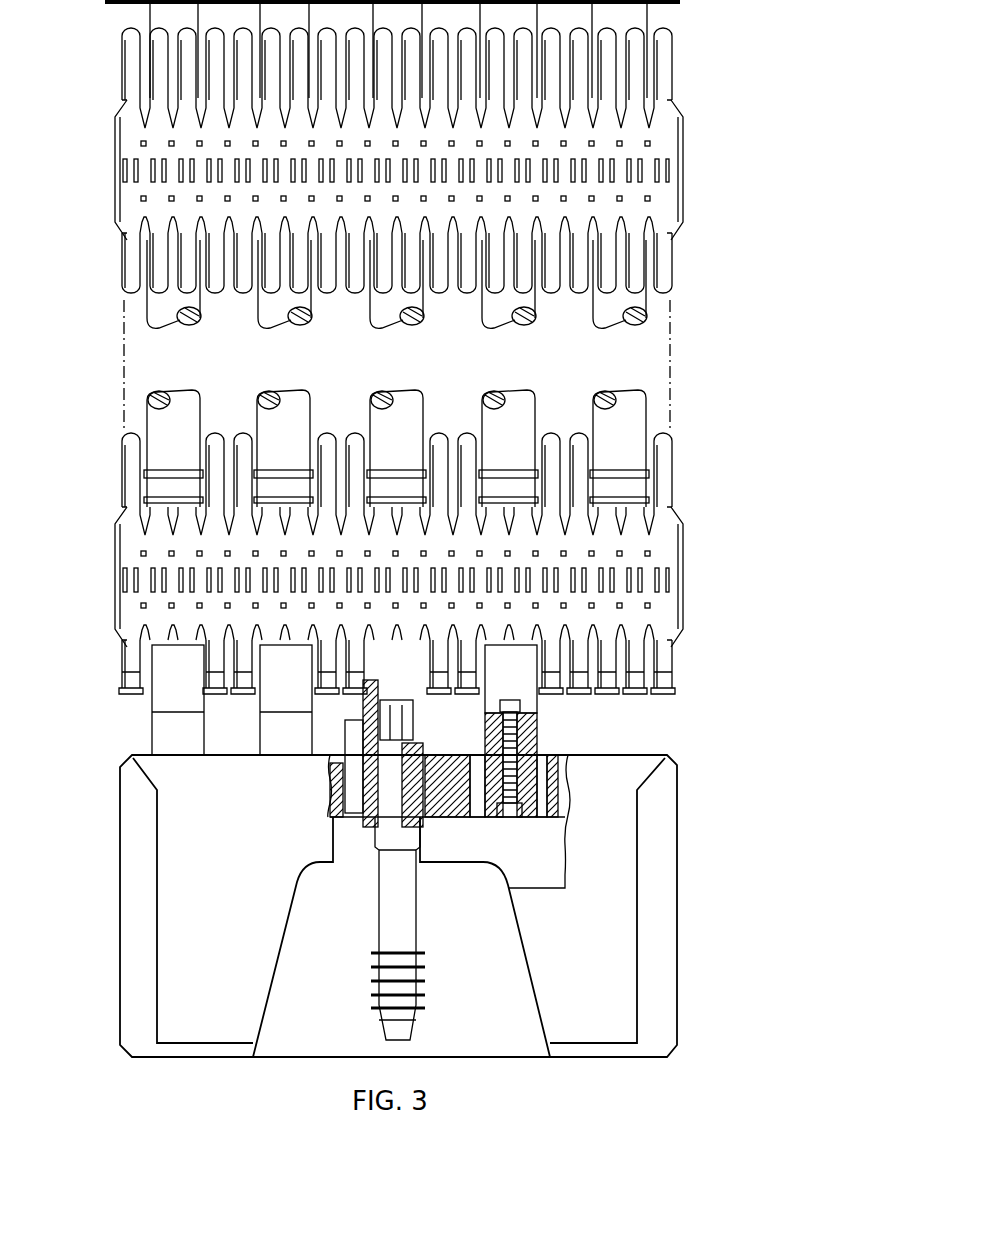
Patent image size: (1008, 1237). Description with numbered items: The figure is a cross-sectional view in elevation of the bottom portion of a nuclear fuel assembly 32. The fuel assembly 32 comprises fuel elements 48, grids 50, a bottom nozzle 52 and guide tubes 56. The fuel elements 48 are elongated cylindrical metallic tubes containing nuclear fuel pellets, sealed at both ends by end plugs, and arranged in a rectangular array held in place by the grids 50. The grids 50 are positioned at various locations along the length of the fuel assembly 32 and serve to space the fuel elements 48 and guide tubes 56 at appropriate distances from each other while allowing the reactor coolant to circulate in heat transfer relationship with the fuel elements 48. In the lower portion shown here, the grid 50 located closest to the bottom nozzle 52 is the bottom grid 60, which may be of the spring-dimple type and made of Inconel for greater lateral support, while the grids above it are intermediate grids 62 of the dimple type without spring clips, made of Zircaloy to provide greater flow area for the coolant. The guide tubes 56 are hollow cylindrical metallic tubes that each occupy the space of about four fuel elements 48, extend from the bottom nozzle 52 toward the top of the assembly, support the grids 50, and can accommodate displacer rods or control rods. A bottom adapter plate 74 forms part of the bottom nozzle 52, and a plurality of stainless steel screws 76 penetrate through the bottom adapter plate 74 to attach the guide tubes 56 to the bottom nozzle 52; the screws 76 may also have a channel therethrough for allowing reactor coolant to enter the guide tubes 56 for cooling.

The fuel assembly 32 is at (96, 446).
The fuel elements 48 is at (158, 38).
The grids 50 is at (660, 202).
The bottom nozzle 52 is at (657, 935).
The guide tubes 56 is at (304, 400).
The bottom grid 60 is at (657, 543).
The intermediate grids 62 is at (657, 143).
The bottom adapter plate 74 is at (457, 755).
The screws 76 is at (505, 813).